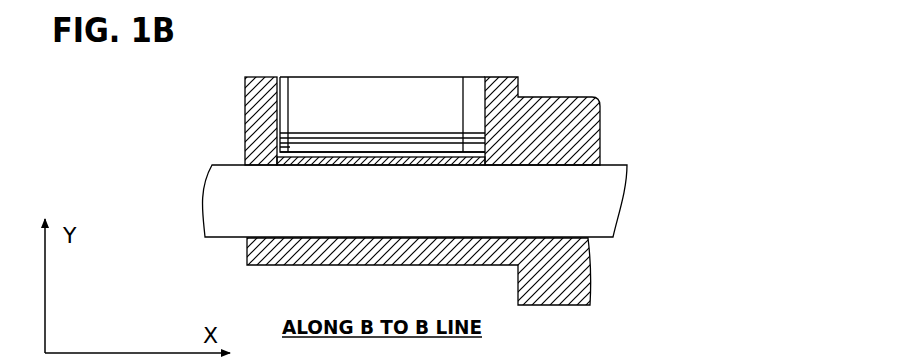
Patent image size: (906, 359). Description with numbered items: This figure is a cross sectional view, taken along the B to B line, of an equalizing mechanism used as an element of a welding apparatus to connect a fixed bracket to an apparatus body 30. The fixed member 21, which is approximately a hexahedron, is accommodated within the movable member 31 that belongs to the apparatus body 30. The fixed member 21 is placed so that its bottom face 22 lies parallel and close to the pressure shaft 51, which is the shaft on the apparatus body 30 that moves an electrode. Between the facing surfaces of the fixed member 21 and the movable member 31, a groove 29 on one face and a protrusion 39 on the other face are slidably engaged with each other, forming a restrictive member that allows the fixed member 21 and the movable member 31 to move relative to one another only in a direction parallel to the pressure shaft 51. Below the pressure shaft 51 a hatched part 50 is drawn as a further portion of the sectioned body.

The fixed member 21 is at (413, 77).
The bottom face 22 is at (412, 164).
The groove 29 is at (313, 138).
The apparatus body 30 is at (668, 24).
The movable member 31 is at (510, 77).
The protrusion 39 is at (285, 150).
The heat sink 50 is at (548, 293).
The pressure shaft 51 is at (232, 228).